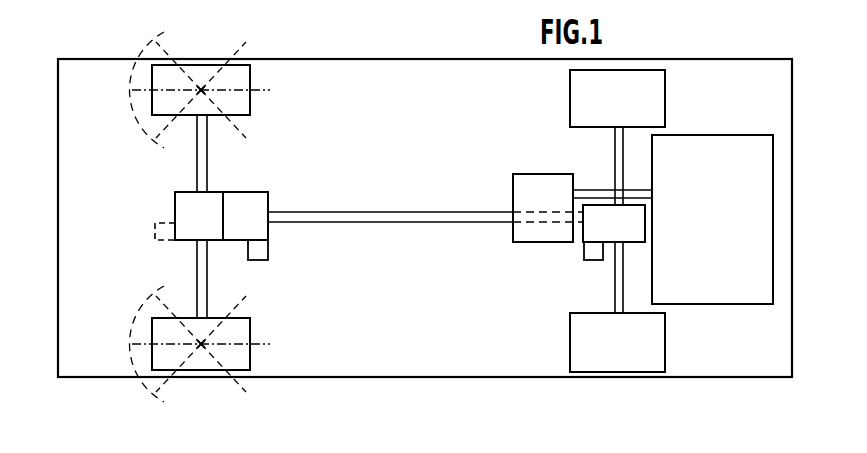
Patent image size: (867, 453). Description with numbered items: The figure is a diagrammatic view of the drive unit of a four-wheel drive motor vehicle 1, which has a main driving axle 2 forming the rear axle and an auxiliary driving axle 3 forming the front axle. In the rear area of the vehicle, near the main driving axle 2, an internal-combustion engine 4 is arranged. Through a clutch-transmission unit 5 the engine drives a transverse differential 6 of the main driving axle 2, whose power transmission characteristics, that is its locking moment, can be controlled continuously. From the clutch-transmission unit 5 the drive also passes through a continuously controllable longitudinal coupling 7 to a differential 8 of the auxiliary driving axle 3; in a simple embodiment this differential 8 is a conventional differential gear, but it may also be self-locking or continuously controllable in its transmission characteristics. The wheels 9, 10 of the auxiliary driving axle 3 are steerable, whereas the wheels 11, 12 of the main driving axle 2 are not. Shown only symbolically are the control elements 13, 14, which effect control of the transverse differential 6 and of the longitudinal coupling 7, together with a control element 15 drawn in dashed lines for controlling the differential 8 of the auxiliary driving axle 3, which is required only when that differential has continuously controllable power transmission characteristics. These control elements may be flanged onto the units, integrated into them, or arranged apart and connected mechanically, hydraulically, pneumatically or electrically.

The motor vehicle 1 is at (361, 57).
The main driving axle 2 is at (594, 153).
The auxiliary driving axle 3 is at (222, 145).
The internal-combustion engine 4 is at (719, 135).
The clutch-transmission unit 5 is at (532, 173).
The transverse differential 6 is at (588, 232).
The longitudinal coupling 7 is at (254, 191).
The differential 8 is at (183, 191).
The wheel 9 is at (251, 333).
The wheel 10 is at (251, 78).
The wheel 11 is at (570, 343).
The wheel 12 is at (570, 93).
The control element 13 is at (597, 262).
The control element 14 is at (257, 260).
The control element 15 is at (157, 246).